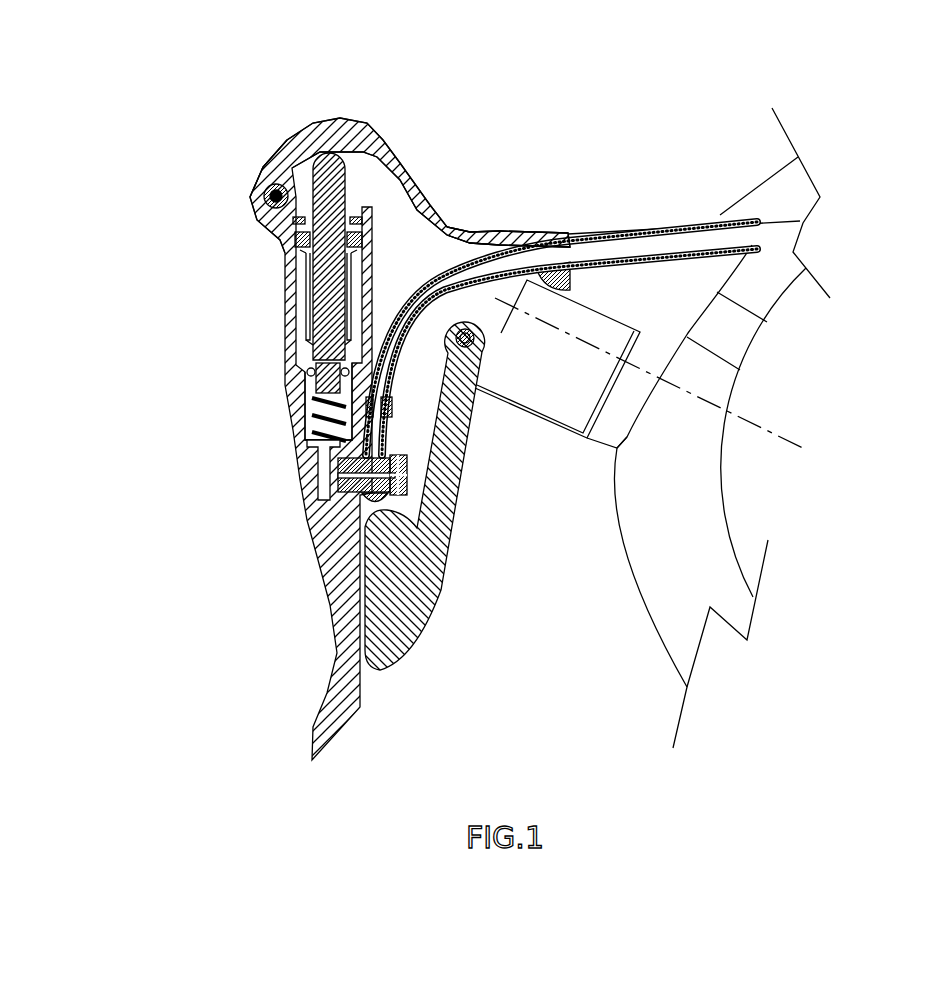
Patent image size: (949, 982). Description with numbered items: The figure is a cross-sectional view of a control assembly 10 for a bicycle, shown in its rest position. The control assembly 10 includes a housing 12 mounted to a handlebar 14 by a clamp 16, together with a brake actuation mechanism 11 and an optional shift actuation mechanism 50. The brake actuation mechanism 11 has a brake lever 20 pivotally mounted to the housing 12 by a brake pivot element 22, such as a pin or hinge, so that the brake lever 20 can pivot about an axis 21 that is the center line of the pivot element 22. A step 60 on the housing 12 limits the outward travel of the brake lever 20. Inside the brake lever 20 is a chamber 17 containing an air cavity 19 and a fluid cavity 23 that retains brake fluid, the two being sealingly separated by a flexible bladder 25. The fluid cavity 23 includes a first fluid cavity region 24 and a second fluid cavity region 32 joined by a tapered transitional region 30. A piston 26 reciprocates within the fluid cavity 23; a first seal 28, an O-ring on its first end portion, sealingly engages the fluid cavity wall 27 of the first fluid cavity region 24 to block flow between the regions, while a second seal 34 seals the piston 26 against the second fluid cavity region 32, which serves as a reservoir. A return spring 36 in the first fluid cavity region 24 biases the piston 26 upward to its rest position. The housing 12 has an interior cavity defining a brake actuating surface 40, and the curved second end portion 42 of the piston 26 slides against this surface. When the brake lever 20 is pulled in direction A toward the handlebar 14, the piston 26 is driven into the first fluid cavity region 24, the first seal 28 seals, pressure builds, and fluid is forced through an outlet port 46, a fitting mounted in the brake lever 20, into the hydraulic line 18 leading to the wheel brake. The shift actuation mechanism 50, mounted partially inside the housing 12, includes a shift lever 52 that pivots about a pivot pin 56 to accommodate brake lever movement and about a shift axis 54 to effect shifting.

The control assembly 10 is at (587, 147).
The brake actuation mechanism 11 is at (356, 439).
The housing 12 is at (450, 233).
The handlebar 14 is at (702, 478).
The clamp 16 is at (738, 345).
The chamber 17 is at (281, 270).
The hydraulic line 18 is at (707, 240).
The air cavity 19 is at (347, 263).
The brake lever 20 is at (356, 439).
The axis 21 is at (262, 197).
The brake pivot element 22 is at (257, 177).
The fluid cavity 23 is at (354, 348).
The first fluid cavity region 24 is at (300, 413).
The flexible bladder 25 is at (310, 290).
The piston 26 is at (313, 343).
The fluid cavity wall 27 is at (307, 418).
The first seal 28 is at (308, 378).
The tapered transitional region 30 is at (310, 372).
The second fluid cavity region 32 is at (300, 317).
The second seal 34 is at (293, 242).
The return spring 36 is at (313, 447).
The brake actuating surface 40 is at (354, 160).
The curved second end portion 42 is at (347, 168).
The outlet port 46 is at (445, 552).
The shift actuation mechanism 50 is at (533, 458).
The shift lever 52 is at (413, 642).
The shift axis 54 is at (787, 440).
The pivot pin 56 is at (481, 362).
The step 60 is at (273, 160).
The direction A is at (231, 791).